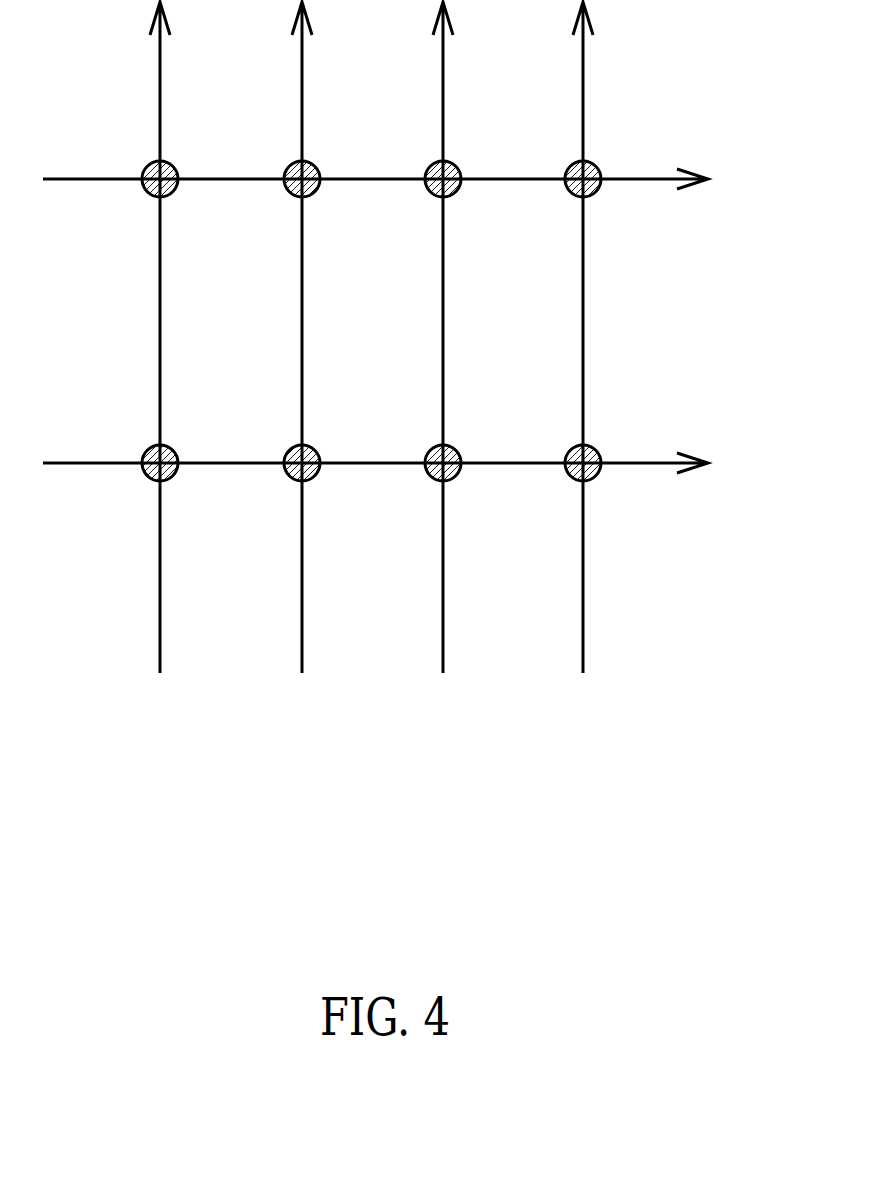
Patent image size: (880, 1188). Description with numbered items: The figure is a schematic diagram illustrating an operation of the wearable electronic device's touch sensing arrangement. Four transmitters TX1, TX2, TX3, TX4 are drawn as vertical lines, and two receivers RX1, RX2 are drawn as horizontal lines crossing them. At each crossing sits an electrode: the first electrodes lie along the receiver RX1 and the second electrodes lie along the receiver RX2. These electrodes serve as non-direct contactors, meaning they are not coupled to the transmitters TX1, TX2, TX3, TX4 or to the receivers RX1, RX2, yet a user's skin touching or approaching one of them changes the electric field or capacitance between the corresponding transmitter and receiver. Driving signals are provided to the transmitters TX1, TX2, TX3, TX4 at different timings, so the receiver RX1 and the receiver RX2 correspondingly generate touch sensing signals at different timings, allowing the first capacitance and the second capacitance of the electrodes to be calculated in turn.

The receiver RX1 is at (410, 179).
The receiver RX2 is at (410, 463).
The transmitter TX1 is at (158, 358).
The transmitter TX2 is at (300, 358).
The transmitter TX3 is at (441, 358).
The transmitter TX4 is at (581, 358).